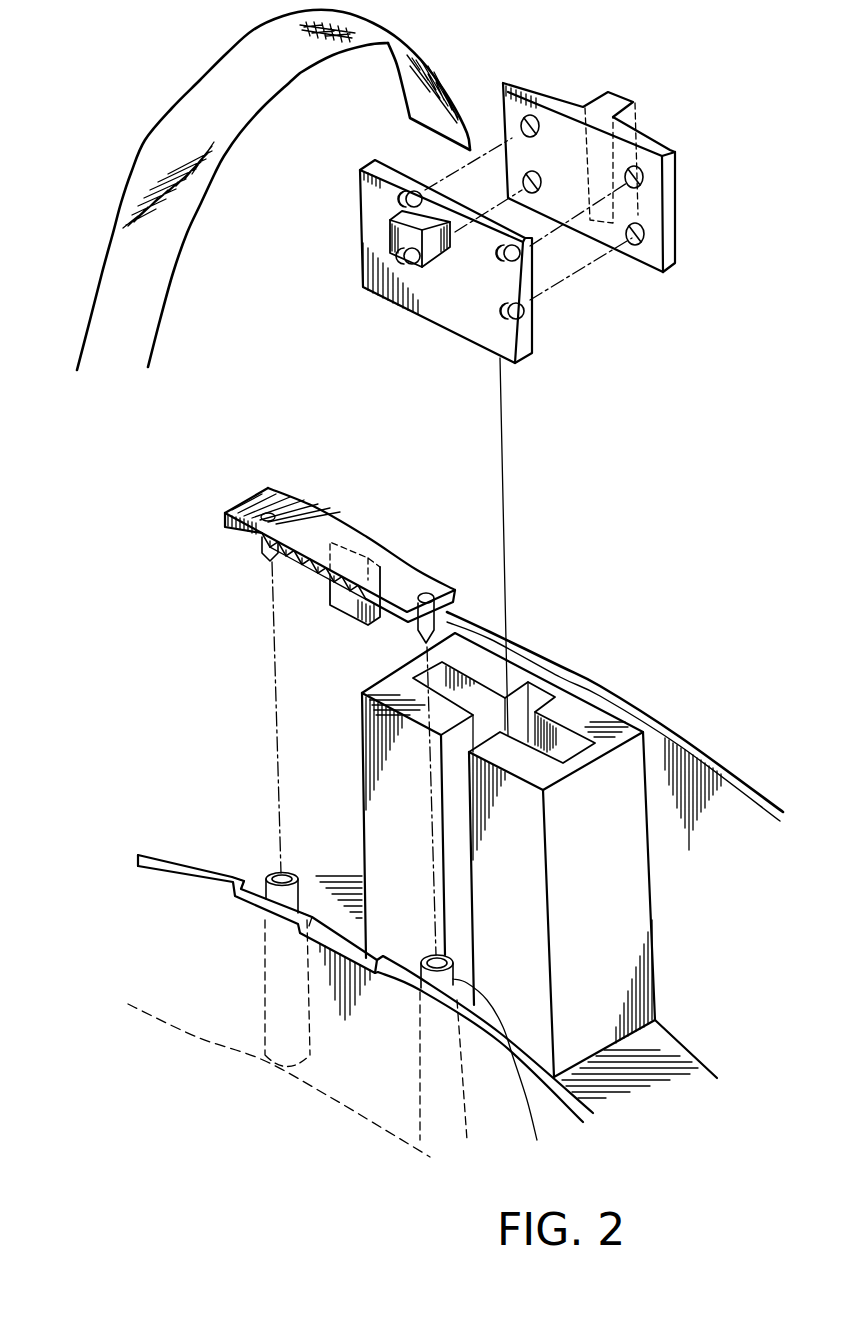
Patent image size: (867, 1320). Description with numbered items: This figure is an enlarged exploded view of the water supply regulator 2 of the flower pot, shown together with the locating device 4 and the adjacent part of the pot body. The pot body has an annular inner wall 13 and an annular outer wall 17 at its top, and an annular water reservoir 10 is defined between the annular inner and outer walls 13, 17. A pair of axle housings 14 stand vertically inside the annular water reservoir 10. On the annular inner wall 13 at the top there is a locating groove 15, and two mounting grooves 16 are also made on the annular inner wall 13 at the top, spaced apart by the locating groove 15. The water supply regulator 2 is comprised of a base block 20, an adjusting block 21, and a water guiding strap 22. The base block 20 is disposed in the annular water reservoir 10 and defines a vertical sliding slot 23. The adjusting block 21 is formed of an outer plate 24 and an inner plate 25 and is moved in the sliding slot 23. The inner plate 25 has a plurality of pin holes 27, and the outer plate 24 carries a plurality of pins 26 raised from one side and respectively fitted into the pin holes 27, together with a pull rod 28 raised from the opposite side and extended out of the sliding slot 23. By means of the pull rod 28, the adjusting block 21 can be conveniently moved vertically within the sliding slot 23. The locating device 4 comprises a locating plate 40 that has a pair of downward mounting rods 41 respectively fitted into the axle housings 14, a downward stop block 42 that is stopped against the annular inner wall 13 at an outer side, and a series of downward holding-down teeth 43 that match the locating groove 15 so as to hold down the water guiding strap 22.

The water supply regulator 2 is at (165, 80).
The water guiding strap 22 is at (123, 228).
The adjusting block 21 is at (508, 385).
The outer plate 24 is at (447, 313).
The inner plate 25 is at (668, 202).
The pins 26 is at (392, 204).
The pin holes 27 is at (530, 123).
The pull rod 28 is at (393, 233).
The locating plate 40 is at (309, 721).
The mounting rods 41 is at (268, 558).
The stop block 42 is at (350, 610).
The holding-down teeth 43 is at (316, 566).
The locating device 4 is at (441, 914).
The annular water reservoir 10 is at (715, 800).
The annular outer wall 17 is at (673, 738).
The annular inner wall 13 is at (168, 864).
The axle housings 14 is at (267, 873).
The locating groove 15 is at (340, 952).
The mounting grooves 16 is at (252, 888).
The base block 20 is at (527, 860).
The sliding slot 23 is at (565, 745).